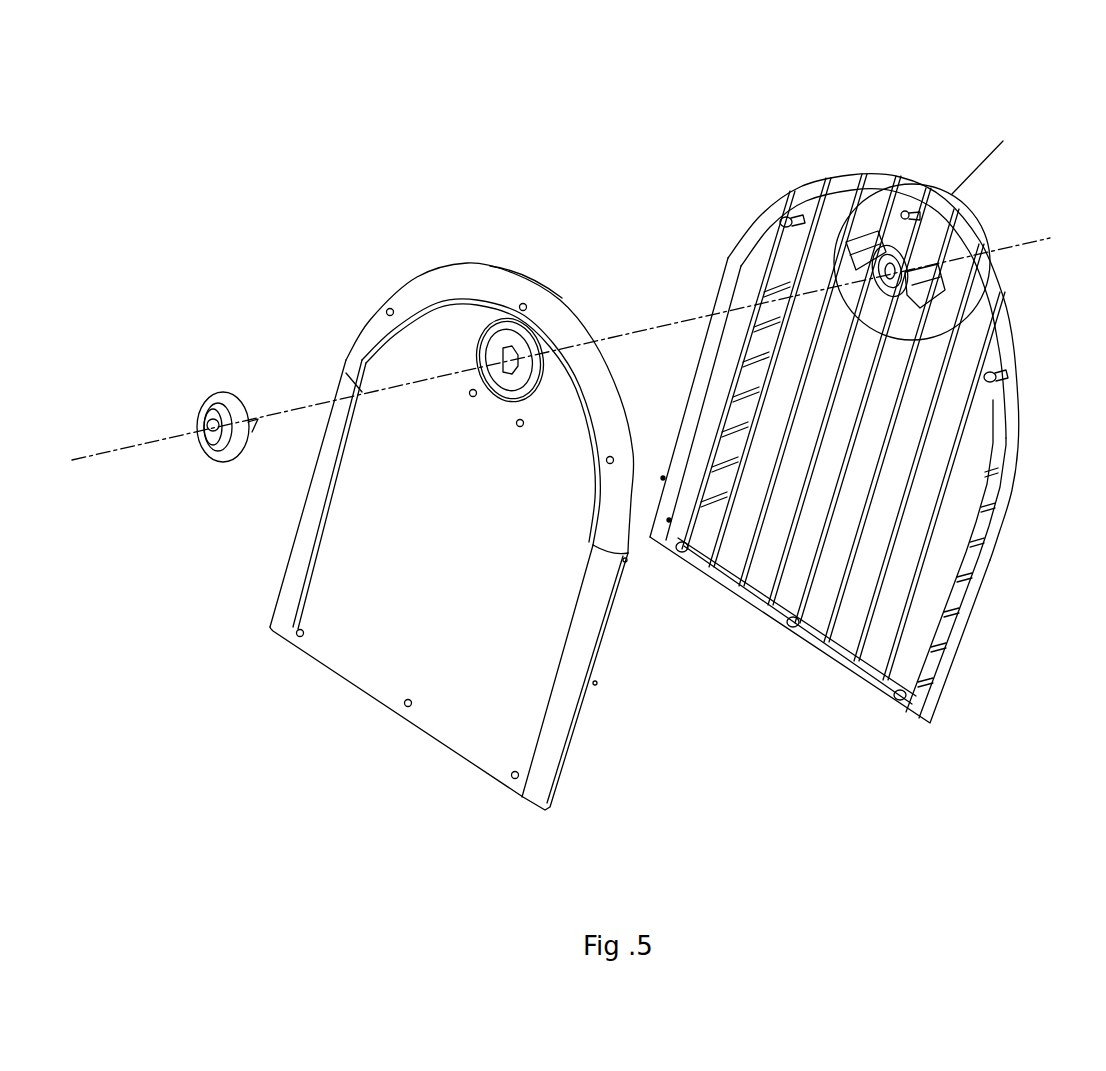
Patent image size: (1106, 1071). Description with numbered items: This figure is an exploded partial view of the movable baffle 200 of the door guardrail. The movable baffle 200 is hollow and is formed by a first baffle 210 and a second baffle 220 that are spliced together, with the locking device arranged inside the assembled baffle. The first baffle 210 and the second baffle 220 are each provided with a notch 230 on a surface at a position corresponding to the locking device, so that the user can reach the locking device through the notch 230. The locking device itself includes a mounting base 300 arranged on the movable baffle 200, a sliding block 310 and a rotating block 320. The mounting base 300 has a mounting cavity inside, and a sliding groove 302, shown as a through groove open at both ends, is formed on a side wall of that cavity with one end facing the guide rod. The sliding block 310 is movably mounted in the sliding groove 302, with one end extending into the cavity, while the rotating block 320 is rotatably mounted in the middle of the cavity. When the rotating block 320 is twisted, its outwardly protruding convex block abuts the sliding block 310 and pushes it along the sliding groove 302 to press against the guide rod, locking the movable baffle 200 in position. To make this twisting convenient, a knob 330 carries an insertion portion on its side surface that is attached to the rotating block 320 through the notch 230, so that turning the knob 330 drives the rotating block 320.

The movable baffle 200 is at (593, 187).
The first baffle 210 is at (382, 652).
The second baffle 220 is at (962, 625).
The notch 230 is at (483, 357).
The mounting base 300 is at (930, 262).
The sliding groove 302 is at (942, 290).
The sliding block 310 is at (762, 224).
The rotating block 320 is at (905, 276).
The knob 330 is at (207, 391).